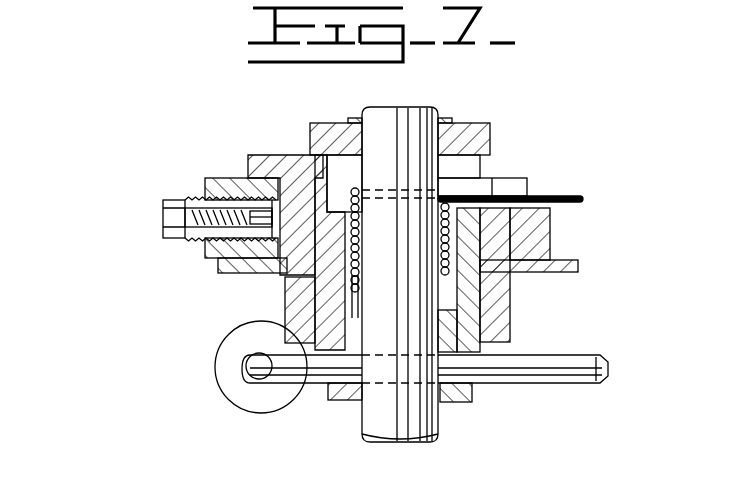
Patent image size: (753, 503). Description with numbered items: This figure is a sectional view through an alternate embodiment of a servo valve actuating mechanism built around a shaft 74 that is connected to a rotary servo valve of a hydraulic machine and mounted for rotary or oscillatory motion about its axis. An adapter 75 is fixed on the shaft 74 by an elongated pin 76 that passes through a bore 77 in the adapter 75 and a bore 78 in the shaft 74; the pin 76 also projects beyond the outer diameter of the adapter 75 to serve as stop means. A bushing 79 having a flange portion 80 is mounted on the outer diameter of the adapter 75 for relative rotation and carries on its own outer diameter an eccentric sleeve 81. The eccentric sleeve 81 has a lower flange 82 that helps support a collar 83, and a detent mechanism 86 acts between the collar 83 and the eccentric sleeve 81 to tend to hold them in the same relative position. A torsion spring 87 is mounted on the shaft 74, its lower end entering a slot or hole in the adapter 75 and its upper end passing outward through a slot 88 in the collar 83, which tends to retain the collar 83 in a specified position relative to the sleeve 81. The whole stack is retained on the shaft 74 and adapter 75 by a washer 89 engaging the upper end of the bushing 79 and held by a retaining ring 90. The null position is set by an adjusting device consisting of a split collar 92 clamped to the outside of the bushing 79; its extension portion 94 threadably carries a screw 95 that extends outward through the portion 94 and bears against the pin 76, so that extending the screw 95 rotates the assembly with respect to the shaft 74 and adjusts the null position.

The shaft 74 is at (442, 418).
The adapter 75 is at (465, 401).
The elongated pin 76 is at (585, 385).
The bore 77 is at (463, 362).
The bore 78 is at (375, 378).
The bushing 79 is at (480, 307).
The flange portion 80 is at (290, 163).
The eccentric sleeve 81 is at (287, 273).
The lower flange 82 is at (560, 262).
The collar 83 is at (242, 185).
The detent mechanism 86 is at (160, 215).
The torsion spring 87 is at (470, 197).
The slot 88 is at (512, 186).
The washer 89 is at (465, 135).
The retaining ring 90 is at (447, 118).
The split collar 92 is at (510, 313).
The extension portion 94 is at (228, 360).
The screw 95 is at (258, 380).